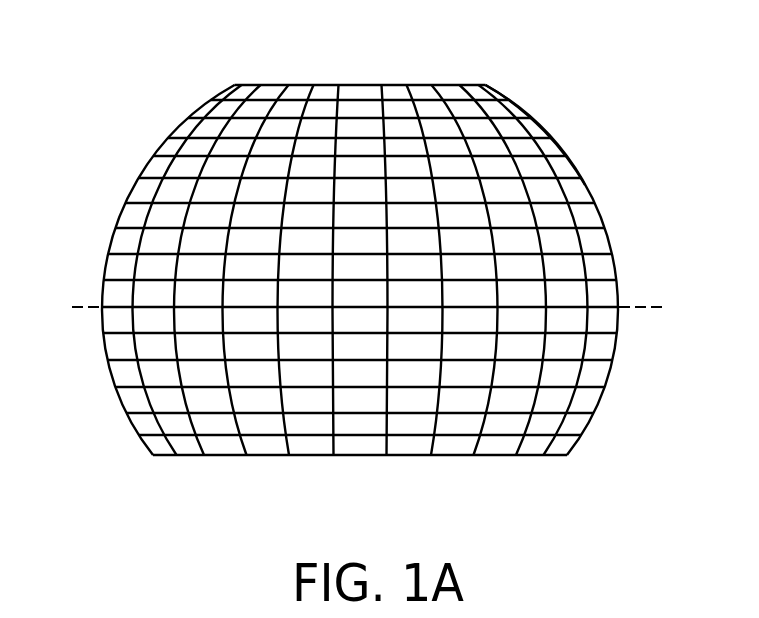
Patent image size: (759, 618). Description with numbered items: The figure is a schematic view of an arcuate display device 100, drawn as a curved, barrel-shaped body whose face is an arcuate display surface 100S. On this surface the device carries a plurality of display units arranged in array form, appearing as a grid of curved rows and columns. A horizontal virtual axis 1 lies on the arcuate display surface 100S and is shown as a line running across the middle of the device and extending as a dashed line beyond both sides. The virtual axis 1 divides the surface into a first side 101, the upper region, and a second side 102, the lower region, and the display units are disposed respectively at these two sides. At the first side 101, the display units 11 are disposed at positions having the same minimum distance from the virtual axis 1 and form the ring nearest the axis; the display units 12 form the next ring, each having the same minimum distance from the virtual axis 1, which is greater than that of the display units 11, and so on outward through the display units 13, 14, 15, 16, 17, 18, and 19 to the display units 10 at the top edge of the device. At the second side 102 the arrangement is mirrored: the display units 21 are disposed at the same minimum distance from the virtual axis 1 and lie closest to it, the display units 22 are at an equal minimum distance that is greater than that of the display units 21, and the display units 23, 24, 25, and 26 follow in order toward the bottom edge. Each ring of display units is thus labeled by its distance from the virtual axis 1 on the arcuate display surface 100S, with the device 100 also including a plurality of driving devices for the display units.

The arcuate display device 100 is at (733, 512).
The arcuate display surface 100S is at (541, 125).
The first side 101 is at (620, 189).
The second side 102 is at (632, 400).
The virtual axis 1 is at (663, 307).
The display units 10 is at (228, 92).
The display units 19 is at (205, 109).
The display units 18 is at (183, 128).
The display units 17 is at (166, 147).
The display units 16 is at (151, 167).
The display units 15 is at (137, 190).
The display units 14 is at (126, 216).
The display units 13 is at (117, 241).
The display units 12 is at (112, 267).
The display units 11 is at (109, 294).
The display units 21 is at (108, 320).
The display units 22 is at (111, 346).
The display units 23 is at (117, 374).
The display units 24 is at (126, 400).
The display units 25 is at (138, 424).
The display units 26 is at (152, 445).